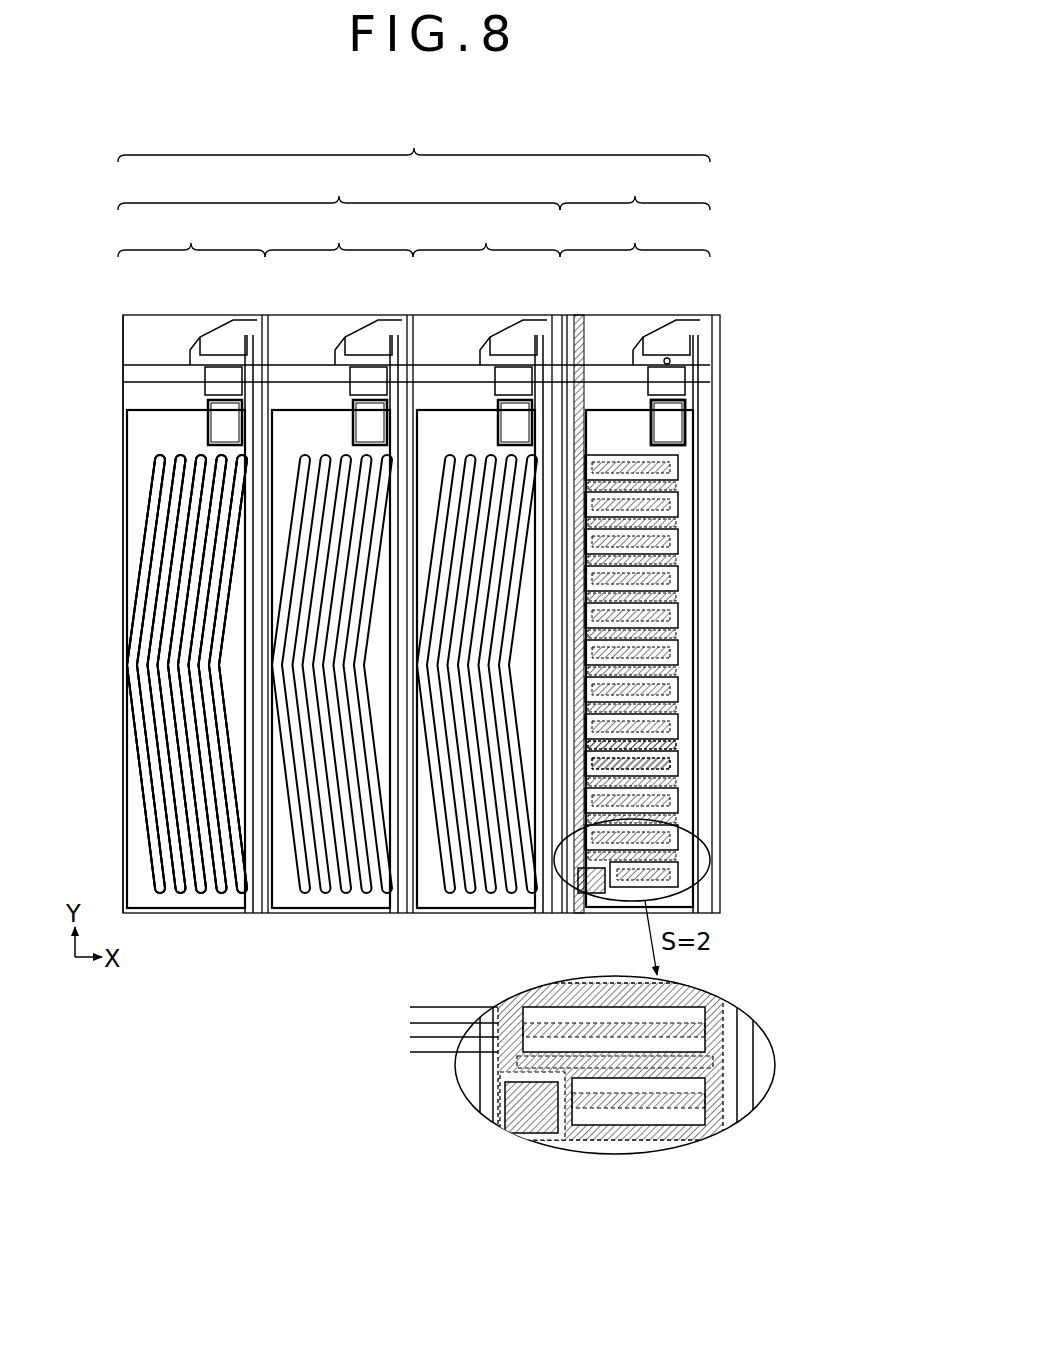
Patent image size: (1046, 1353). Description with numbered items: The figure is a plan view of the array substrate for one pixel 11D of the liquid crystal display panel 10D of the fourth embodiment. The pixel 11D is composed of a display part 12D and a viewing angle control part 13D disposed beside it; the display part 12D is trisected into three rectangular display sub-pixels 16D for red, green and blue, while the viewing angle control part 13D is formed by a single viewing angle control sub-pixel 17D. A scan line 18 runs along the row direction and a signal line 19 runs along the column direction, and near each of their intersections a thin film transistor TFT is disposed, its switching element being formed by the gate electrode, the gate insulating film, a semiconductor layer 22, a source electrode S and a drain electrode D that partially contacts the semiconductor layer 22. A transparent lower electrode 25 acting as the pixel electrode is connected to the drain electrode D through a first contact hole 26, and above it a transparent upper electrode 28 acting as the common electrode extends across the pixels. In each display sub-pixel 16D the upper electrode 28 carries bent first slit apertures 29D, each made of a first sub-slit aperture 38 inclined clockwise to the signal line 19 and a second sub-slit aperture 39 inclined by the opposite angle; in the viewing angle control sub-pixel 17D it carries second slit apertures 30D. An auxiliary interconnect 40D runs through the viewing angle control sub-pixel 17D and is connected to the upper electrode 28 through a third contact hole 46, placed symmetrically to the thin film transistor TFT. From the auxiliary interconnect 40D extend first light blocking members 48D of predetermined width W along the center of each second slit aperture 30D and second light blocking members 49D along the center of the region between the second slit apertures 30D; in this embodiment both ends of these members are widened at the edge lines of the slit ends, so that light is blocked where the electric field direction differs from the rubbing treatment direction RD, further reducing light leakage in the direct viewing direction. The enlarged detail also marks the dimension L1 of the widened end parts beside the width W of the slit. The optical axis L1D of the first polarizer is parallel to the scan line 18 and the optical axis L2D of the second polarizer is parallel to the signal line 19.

The liquid crystal display panel 10D is at (92, 134).
The pixel 11D is at (414, 140).
The display part 12D is at (339, 188).
The viewing angle control part 13D is at (635, 188).
The display sub-pixel 16D is at (339, 235).
The viewing angle control sub-pixel 17D is at (635, 235).
The scan line 18 is at (155, 376).
The signal line 19 is at (700, 473).
The semiconductor layer 22 is at (671, 361).
The lower electrode 25 is at (125, 843).
The first contact hole 26 is at (672, 428).
The upper electrode 28 is at (147, 425).
The first slit aperture 29D is at (135, 668).
The second slit aperture 30D is at (683, 810).
The first sub-slit aperture 38 is at (148, 547).
The second sub-slit aperture 39 is at (148, 788).
The auxiliary interconnect 40D is at (578, 316).
The third contact hole 46 is at (590, 885).
The first light blocking member 48D is at (672, 766).
The second light blocking member 49D is at (672, 706).
The source electrode S is at (676, 342).
The drain electrode D is at (683, 380).
The thin film transistor TFT is at (762, 318).
The optical axis of the first polarizer L1D is at (350, 288).
The optical axis of the second polarizer L2D is at (315, 255).
The slit spacing L1 is at (420, 965).
The width of the light blocking member W is at (400, 1030).
The rubbing treatment direction RD is at (798, 437).